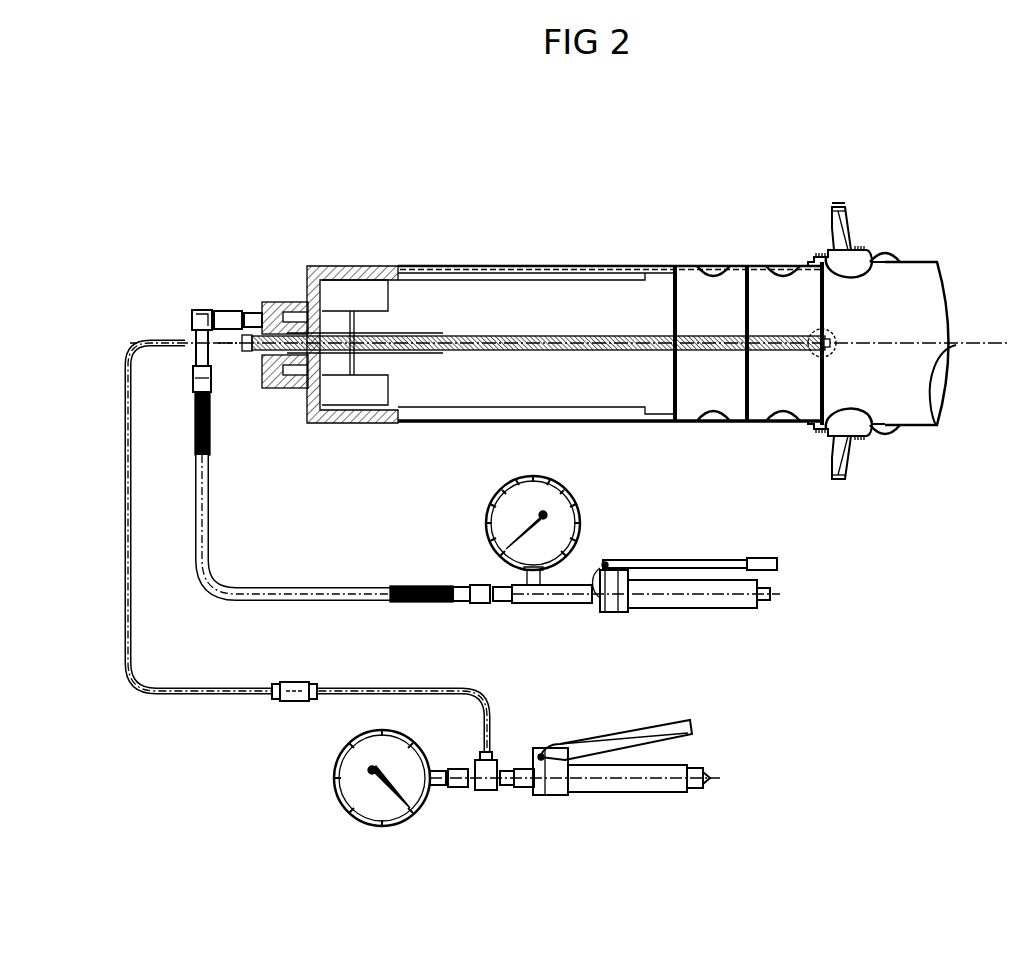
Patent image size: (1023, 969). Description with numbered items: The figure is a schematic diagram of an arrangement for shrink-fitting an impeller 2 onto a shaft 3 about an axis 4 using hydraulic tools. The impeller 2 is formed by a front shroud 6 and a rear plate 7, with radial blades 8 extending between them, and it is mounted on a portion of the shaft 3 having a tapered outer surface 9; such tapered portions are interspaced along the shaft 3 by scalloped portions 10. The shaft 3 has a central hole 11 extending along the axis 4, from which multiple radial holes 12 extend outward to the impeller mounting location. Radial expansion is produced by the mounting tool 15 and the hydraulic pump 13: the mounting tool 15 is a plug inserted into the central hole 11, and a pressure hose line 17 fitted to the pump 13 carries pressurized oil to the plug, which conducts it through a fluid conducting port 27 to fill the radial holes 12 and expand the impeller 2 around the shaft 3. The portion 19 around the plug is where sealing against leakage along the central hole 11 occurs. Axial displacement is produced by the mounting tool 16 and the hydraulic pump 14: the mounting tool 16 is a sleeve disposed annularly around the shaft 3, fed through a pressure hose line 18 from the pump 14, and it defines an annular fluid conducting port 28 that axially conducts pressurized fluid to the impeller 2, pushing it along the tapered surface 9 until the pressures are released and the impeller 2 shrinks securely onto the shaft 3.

The impeller 2 is at (833, 310).
The shaft 3 is at (423, 422).
The axis 4 is at (902, 343).
The front shroud 6 is at (850, 240).
The rear plate 7 is at (816, 251).
The radial blades 8 is at (838, 206).
The tapered outer surface 9 is at (833, 280).
The scalloped portions 10 is at (712, 278).
The central hole 11 is at (832, 352).
The radial holes 12 is at (672, 305).
The hydraulic pump 13 is at (618, 812).
The hydraulic pump 14 is at (694, 626).
The mounting tool 15 is at (498, 354).
The mounting tool 16 is at (358, 265).
The pressure hose line 17 is at (122, 530).
The pressure hose line 18 is at (211, 505).
The portion 19 is at (806, 334).
The fluid conducting port 27 is at (527, 335).
The annular fluid conducting port 28 is at (475, 268).